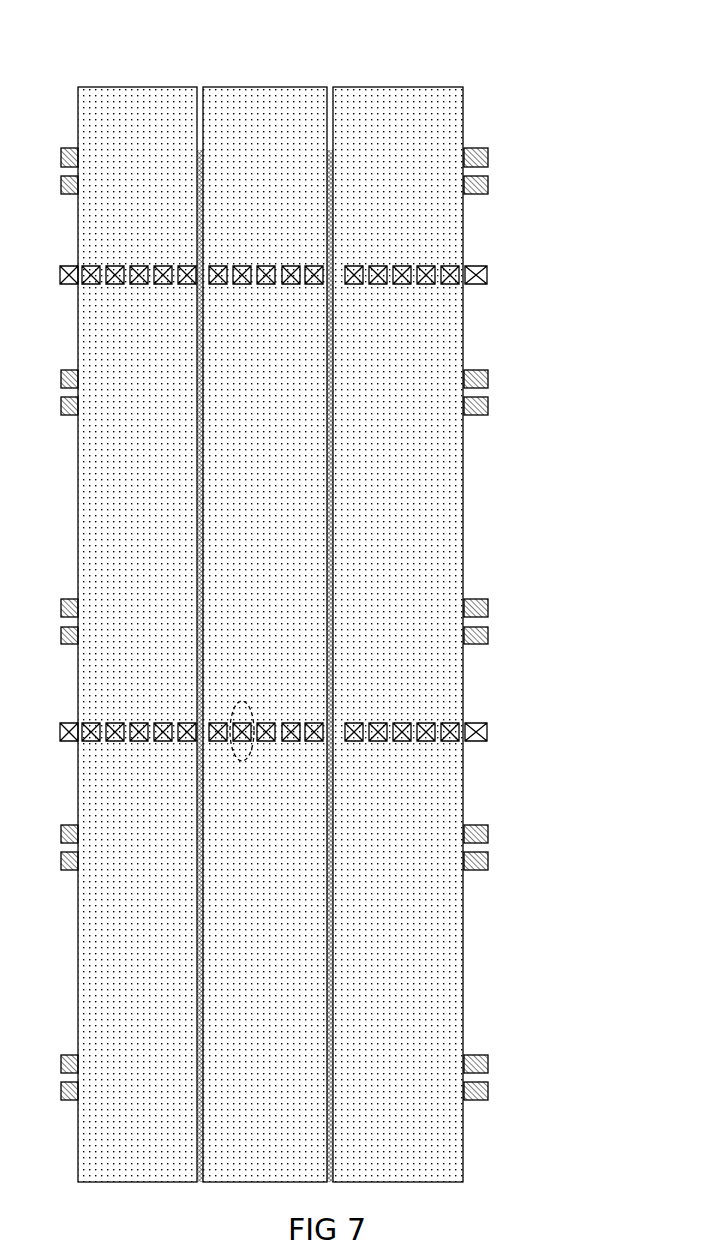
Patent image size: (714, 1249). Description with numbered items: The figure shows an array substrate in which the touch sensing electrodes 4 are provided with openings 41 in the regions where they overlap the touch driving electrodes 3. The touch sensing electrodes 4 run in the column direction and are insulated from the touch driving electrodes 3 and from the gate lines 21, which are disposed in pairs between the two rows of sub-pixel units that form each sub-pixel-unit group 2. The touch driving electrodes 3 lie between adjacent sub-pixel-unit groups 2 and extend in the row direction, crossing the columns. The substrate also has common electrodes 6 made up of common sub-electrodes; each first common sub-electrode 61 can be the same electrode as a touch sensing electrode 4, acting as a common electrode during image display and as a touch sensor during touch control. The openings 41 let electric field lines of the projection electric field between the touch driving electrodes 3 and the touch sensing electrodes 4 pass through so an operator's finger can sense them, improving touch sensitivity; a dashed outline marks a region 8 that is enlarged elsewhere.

The sub-pixel-unit group 2 is at (77, 88).
The touch driving electrode 3 is at (335, 475).
The touch sensing electrode 4 is at (270, 594).
The first common sub-electrode 61 is at (137, 634).
The common electrode 6 is at (200, 87).
The single connector element 8 is at (251, 713).
The gate line 21 is at (496, 624).
The opening 41 is at (123, 473).